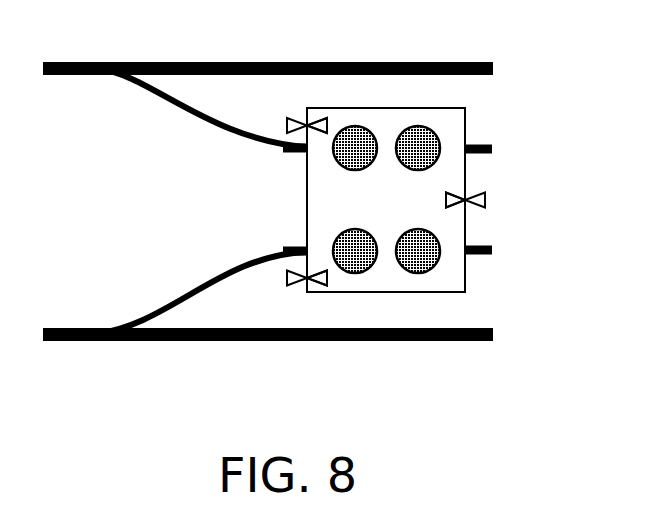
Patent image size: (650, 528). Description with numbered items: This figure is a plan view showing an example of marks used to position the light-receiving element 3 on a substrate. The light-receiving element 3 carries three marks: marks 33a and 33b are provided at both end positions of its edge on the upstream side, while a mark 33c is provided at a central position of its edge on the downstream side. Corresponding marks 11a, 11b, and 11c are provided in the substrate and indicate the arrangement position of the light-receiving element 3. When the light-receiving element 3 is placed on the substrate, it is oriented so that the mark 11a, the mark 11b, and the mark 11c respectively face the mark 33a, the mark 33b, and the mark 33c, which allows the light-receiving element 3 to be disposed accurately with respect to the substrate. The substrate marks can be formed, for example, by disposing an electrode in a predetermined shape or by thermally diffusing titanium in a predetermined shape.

The light-receiving element 3 is at (387, 108).
The mark 11a is at (287, 118).
The mark 11b is at (293, 290).
The mark 11c is at (487, 200).
The mark 33a is at (327, 120).
The mark 33b is at (322, 286).
The mark 33c is at (465, 203).